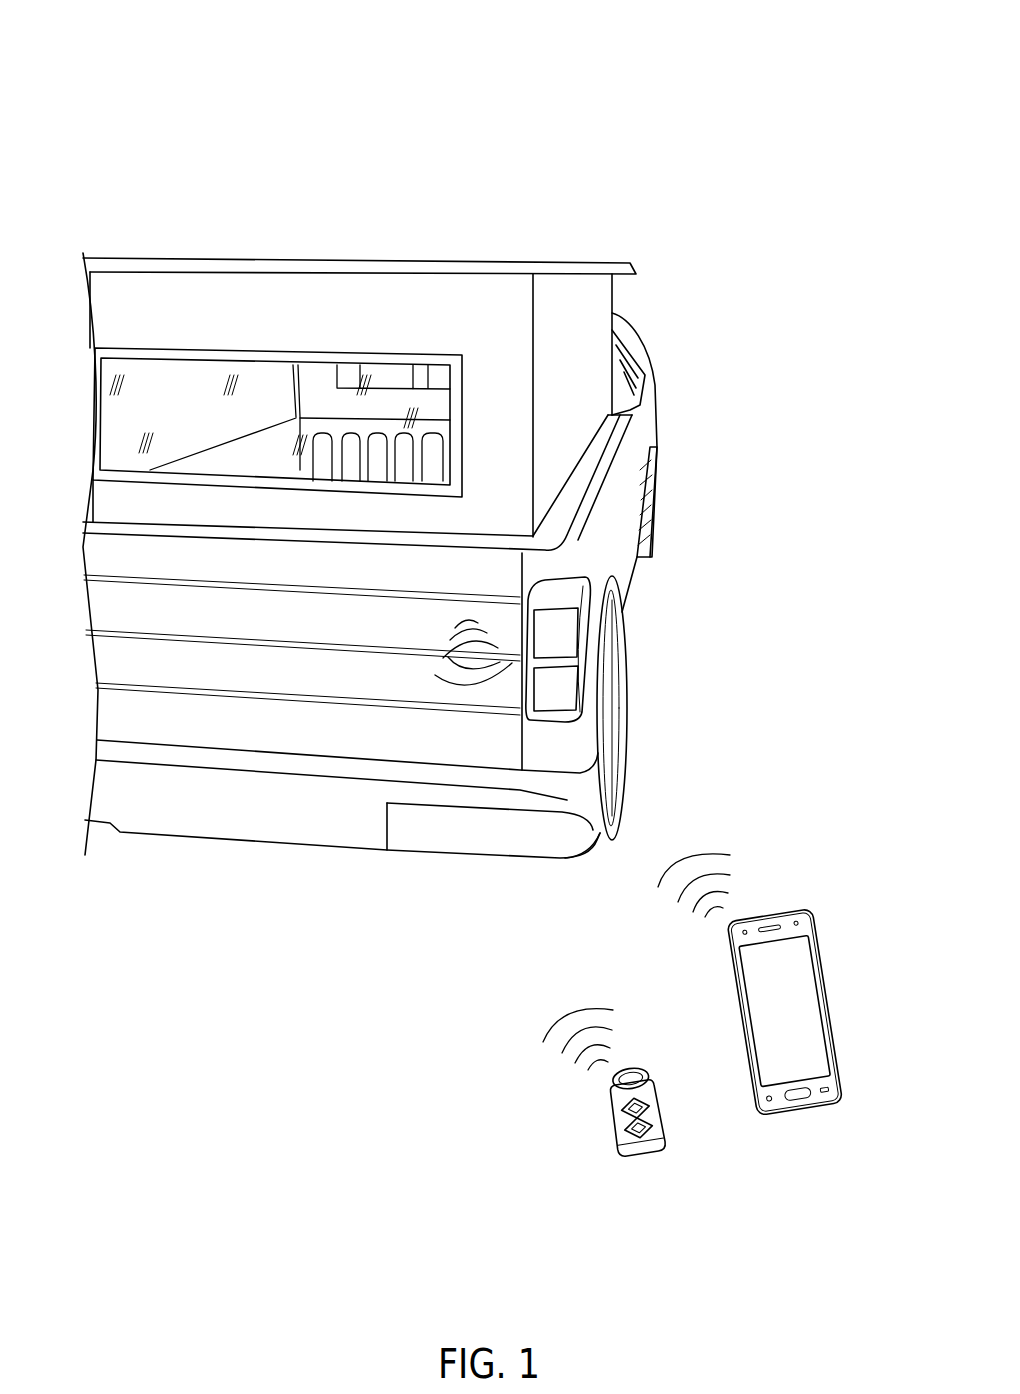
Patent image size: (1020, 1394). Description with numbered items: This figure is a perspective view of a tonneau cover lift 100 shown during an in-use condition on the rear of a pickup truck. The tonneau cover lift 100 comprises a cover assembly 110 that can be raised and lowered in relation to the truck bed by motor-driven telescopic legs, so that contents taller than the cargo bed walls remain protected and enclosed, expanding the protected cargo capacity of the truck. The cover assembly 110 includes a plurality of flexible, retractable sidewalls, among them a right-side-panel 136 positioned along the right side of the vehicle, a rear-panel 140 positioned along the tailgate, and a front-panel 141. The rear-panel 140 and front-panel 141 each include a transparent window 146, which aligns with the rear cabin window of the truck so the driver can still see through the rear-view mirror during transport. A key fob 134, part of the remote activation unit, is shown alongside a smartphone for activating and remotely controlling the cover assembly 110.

The tonneau cover lift 100 is at (727, 88).
The cover assembly 110 is at (769, 117).
The key fob 134 is at (645, 1103).
The right-side-panel 136 is at (595, 311).
The rear-panel 140 is at (118, 493).
The front-panel 141 is at (345, 408).
The transparent window 146 is at (118, 415).